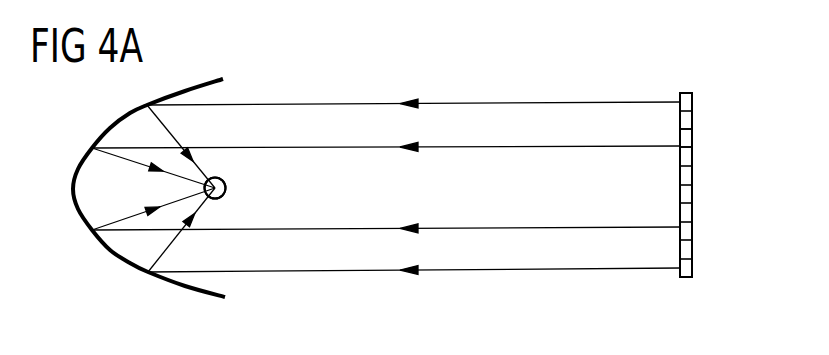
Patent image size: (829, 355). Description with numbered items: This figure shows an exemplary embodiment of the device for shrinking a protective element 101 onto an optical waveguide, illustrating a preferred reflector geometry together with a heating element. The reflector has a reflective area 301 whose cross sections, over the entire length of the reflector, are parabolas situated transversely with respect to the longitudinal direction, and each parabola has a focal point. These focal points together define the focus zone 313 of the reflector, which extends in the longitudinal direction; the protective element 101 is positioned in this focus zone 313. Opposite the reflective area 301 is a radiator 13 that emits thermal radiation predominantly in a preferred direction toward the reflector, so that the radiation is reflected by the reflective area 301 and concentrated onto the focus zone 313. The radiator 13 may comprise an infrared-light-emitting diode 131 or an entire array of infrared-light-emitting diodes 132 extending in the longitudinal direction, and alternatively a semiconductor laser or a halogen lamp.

The reflective area 301 is at (120, 260).
The protective element 101 is at (226, 183).
The focus zone 313 is at (226, 194).
The radiator 13 is at (716, 182).
The infrared-light-emitting diode 131 is at (686, 138).
The array of infrared-light-emitting diodes 132 is at (688, 93).